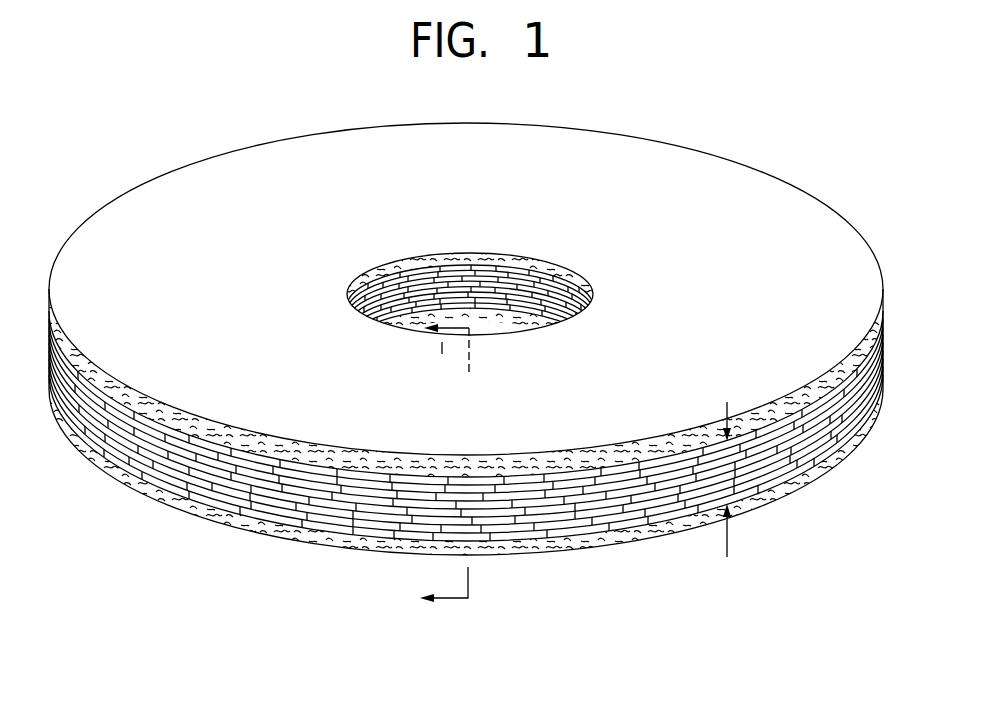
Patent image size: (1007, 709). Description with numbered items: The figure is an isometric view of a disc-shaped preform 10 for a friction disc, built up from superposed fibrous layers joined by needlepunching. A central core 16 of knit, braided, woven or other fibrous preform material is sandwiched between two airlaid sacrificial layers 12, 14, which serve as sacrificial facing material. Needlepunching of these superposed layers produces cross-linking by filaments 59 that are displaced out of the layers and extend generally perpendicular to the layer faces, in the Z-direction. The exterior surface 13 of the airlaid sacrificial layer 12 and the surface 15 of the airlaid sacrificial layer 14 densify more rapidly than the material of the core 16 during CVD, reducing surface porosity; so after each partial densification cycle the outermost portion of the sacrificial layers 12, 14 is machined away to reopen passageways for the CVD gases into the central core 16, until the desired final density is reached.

The disc-shaped preform 10 is at (706, 112).
The airlaid sacrificial layer 12 is at (120, 195).
The surface 13 is at (749, 193).
The airlaid sacrificial layer 14 is at (242, 532).
The surface 15 is at (608, 547).
The core 16 is at (730, 498).
The filaments 59 is at (336, 517).